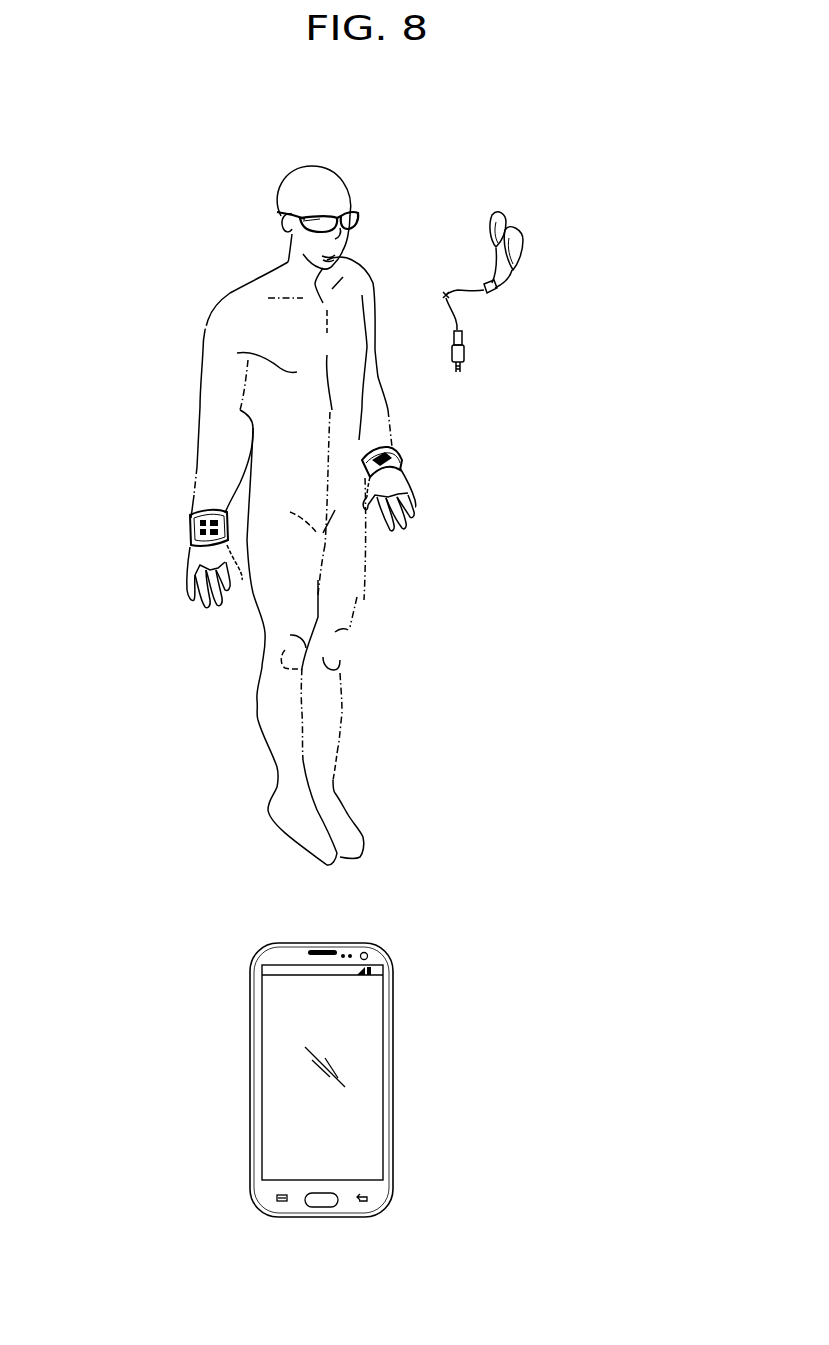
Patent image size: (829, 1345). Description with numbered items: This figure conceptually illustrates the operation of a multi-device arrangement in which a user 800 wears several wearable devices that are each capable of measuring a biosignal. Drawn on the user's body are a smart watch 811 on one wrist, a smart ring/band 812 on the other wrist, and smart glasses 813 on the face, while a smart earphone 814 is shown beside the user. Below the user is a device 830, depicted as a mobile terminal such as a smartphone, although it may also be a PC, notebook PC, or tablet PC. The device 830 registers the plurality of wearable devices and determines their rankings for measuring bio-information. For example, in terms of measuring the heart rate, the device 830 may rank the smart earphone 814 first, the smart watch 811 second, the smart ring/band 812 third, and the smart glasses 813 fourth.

The user 800 is at (355, 583).
The smart watch 811 is at (193, 527).
The smart ring/band 812 is at (442, 465).
The smart glasses 813 is at (383, 218).
The smart earphone 814 is at (521, 234).
The device 830 is at (393, 1077).